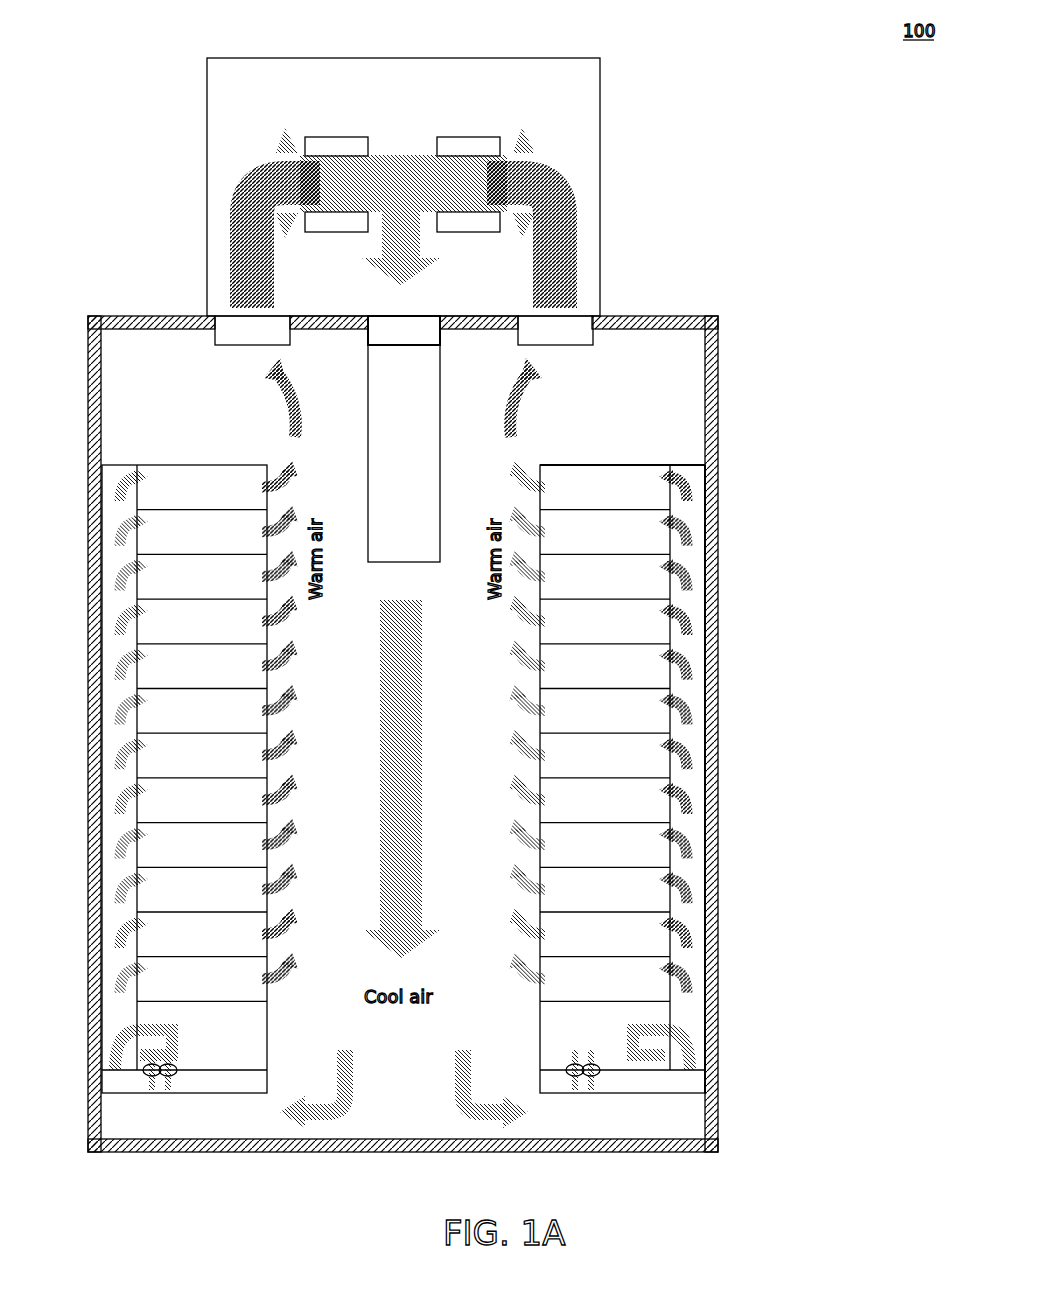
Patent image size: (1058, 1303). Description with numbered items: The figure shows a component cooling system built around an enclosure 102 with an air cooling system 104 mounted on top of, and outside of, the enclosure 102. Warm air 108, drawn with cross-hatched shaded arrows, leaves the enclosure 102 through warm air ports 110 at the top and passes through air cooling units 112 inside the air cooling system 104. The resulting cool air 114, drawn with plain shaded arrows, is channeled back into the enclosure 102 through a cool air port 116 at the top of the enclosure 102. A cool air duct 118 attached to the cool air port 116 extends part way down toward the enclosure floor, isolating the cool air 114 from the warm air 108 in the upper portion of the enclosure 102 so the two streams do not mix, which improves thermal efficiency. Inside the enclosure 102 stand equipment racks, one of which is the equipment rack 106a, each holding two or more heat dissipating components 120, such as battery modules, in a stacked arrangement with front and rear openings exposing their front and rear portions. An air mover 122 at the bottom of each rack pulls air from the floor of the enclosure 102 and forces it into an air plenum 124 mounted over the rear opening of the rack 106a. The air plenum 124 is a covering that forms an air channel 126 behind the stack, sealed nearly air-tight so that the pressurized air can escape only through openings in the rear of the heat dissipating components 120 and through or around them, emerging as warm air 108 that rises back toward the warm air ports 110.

The enclosure 102 is at (712, 348).
The air cooling system 104 is at (597, 107).
The equipment rack 106a is at (198, 450).
The warm air 108 is at (232, 170).
The warm air port 110 is at (404, 330).
The air cooling unit 112 is at (336, 142).
The cool air 114 is at (405, 267).
The cool air port 116 is at (404, 330).
The cool air duct 118 is at (404, 453).
The heat dissipating component 120 is at (403, 739).
The air mover 122 is at (402, 1052).
The air plenum 124 is at (694, 462).
The air channel 126 is at (702, 835).